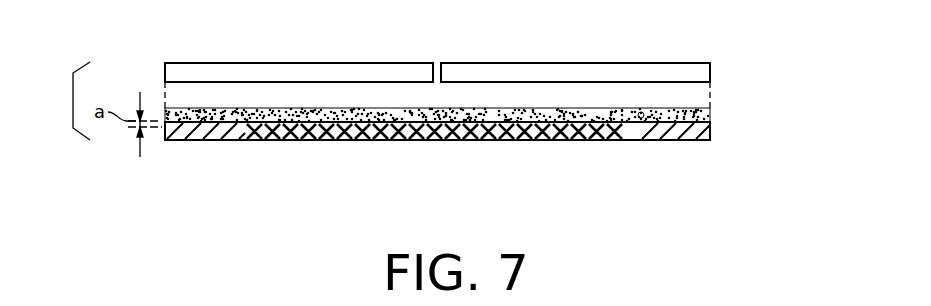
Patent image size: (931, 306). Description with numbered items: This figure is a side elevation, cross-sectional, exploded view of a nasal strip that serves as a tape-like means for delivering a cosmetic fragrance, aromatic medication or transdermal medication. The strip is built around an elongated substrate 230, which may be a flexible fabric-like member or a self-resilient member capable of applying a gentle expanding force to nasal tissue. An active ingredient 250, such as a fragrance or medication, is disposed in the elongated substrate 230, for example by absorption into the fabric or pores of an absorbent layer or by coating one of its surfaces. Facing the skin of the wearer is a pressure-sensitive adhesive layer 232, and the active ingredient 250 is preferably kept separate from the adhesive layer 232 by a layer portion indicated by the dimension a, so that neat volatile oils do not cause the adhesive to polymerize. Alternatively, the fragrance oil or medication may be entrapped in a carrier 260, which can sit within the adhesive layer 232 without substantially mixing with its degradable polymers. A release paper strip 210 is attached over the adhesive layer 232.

The release paper strip 210 is at (470, 70).
The elongated substrate 230 is at (688, 128).
The adhesive layer 232 is at (698, 118).
The active ingredient 250 is at (450, 137).
The carrier 260 is at (641, 110).